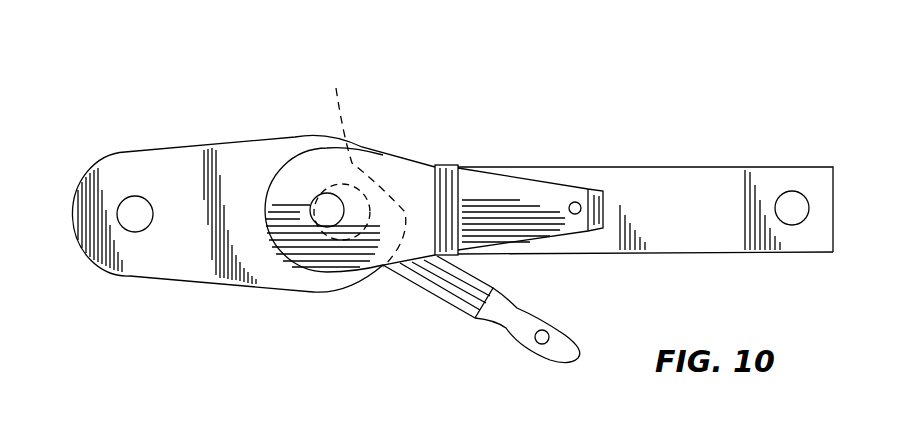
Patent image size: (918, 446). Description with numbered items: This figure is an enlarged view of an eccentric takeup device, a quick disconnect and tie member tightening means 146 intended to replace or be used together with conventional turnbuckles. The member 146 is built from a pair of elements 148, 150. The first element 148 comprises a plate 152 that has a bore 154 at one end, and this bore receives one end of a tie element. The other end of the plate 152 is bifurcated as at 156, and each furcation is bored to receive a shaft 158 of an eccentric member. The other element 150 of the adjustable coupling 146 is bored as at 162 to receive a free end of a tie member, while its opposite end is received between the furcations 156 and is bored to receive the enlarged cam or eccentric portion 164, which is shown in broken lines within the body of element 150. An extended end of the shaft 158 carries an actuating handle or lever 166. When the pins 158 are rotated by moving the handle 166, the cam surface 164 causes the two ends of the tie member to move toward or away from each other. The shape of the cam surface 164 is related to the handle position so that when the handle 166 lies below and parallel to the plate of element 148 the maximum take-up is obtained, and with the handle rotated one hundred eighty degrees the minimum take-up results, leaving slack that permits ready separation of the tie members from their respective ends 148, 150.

The tie member tightening means 146 is at (432, 112).
The element 148 is at (692, 182).
The element 150 is at (185, 255).
The plate 152 is at (682, 233).
The bore 154 is at (788, 224).
The furcations 156 is at (433, 137).
The shaft 158 is at (327, 193).
The bore 162 is at (137, 198).
The cam or eccentric portion 164 is at (340, 98).
The actuating handle or lever 166 is at (507, 330).